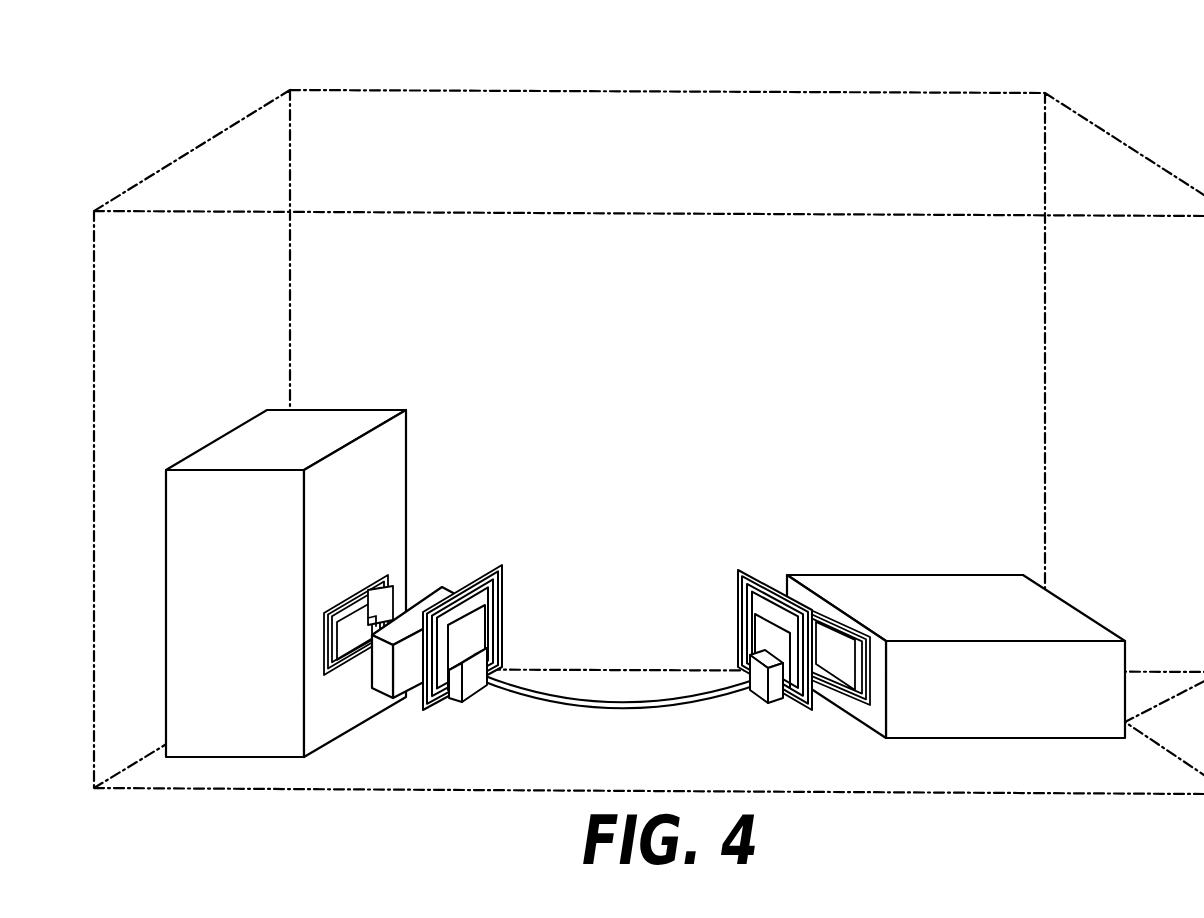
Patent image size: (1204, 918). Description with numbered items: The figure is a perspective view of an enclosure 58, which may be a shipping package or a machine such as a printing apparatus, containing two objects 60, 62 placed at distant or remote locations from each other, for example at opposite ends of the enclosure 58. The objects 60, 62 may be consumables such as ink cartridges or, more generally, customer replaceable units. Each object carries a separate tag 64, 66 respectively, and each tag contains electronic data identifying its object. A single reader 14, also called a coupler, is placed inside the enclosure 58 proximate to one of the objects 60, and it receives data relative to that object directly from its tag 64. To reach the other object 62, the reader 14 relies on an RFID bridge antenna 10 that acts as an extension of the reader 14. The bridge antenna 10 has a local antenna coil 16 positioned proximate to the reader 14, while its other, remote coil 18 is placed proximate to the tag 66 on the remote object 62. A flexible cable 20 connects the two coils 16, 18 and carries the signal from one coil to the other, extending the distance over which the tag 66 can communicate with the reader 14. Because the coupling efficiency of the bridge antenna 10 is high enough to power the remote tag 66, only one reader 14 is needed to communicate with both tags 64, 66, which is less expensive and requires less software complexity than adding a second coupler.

The RFID bridge antenna 10 is at (623, 553).
The reader 14 is at (432, 592).
The local antenna coil 16 is at (505, 598).
The remote coil 18 is at (757, 578).
The flexible cable 20 is at (613, 706).
The enclosure 58 is at (813, 92).
The object 60 is at (370, 408).
The object 62 is at (880, 575).
The tag 64 is at (366, 590).
The tag 66 is at (840, 626).